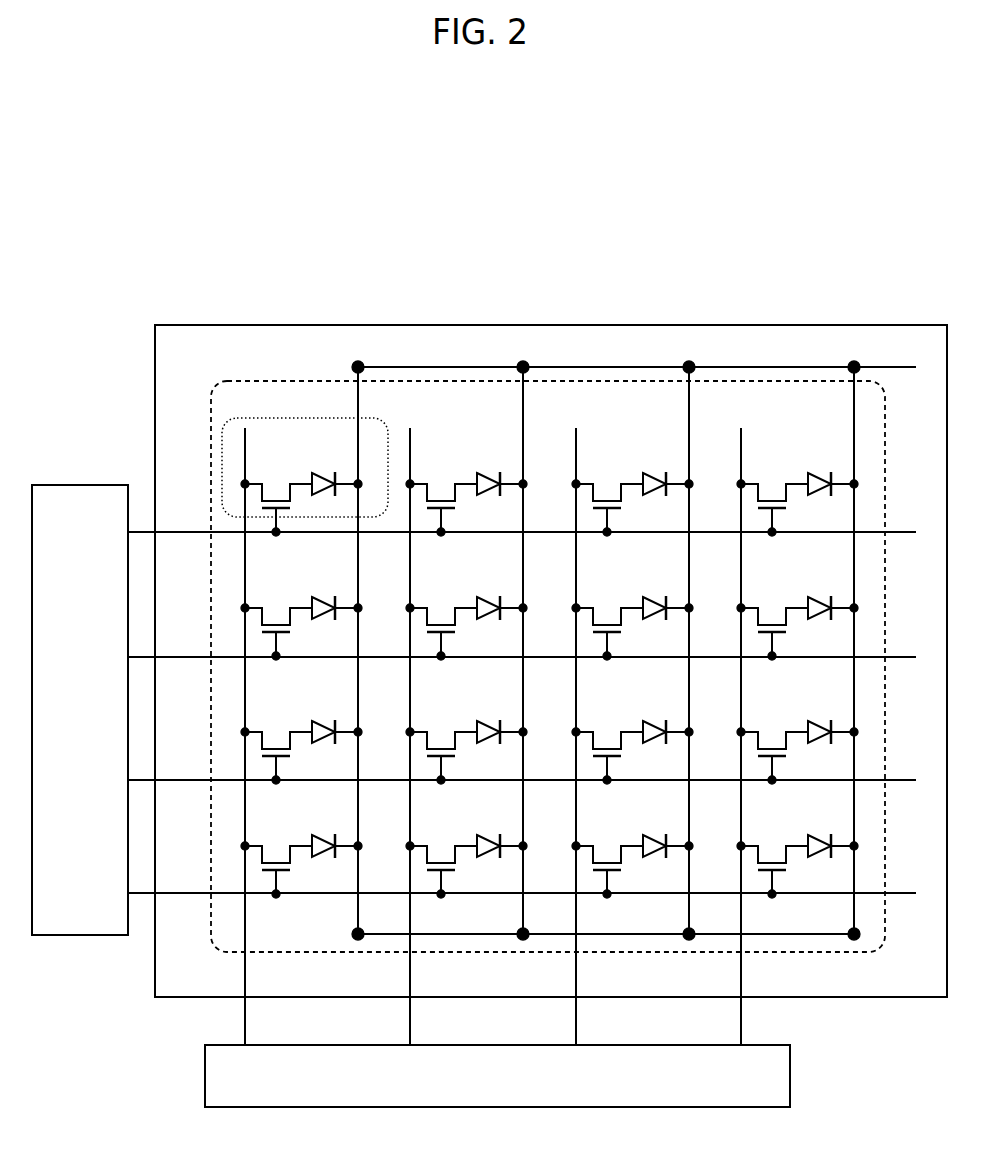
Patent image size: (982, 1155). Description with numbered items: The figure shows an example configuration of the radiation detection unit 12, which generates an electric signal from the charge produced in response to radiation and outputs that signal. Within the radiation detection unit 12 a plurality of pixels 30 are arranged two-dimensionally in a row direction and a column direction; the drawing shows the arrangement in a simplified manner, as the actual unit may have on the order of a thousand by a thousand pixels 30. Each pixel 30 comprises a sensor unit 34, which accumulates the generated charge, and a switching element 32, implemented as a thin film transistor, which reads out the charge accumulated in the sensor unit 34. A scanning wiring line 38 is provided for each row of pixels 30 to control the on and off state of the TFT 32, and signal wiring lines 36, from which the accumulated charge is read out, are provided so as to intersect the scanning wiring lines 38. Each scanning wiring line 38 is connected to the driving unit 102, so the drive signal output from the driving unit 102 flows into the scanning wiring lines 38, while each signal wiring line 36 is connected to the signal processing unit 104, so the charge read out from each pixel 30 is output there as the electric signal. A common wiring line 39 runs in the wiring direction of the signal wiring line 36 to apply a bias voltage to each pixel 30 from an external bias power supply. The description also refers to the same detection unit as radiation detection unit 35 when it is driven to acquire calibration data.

The radiation detection unit 12 is at (155, 358).
The driving unit 102 is at (66, 485).
The signal processing unit 104 is at (790, 1082).
The pixel 30 is at (222, 476).
The switching element (TFT) 32 is at (279, 512).
The sensor unit 34 is at (318, 479).
The radiation detection unit 35 is at (211, 430).
The signal wiring line 36 is at (245, 966).
The scanning wiring line 38 is at (896, 532).
The common wiring line 39 is at (358, 392).